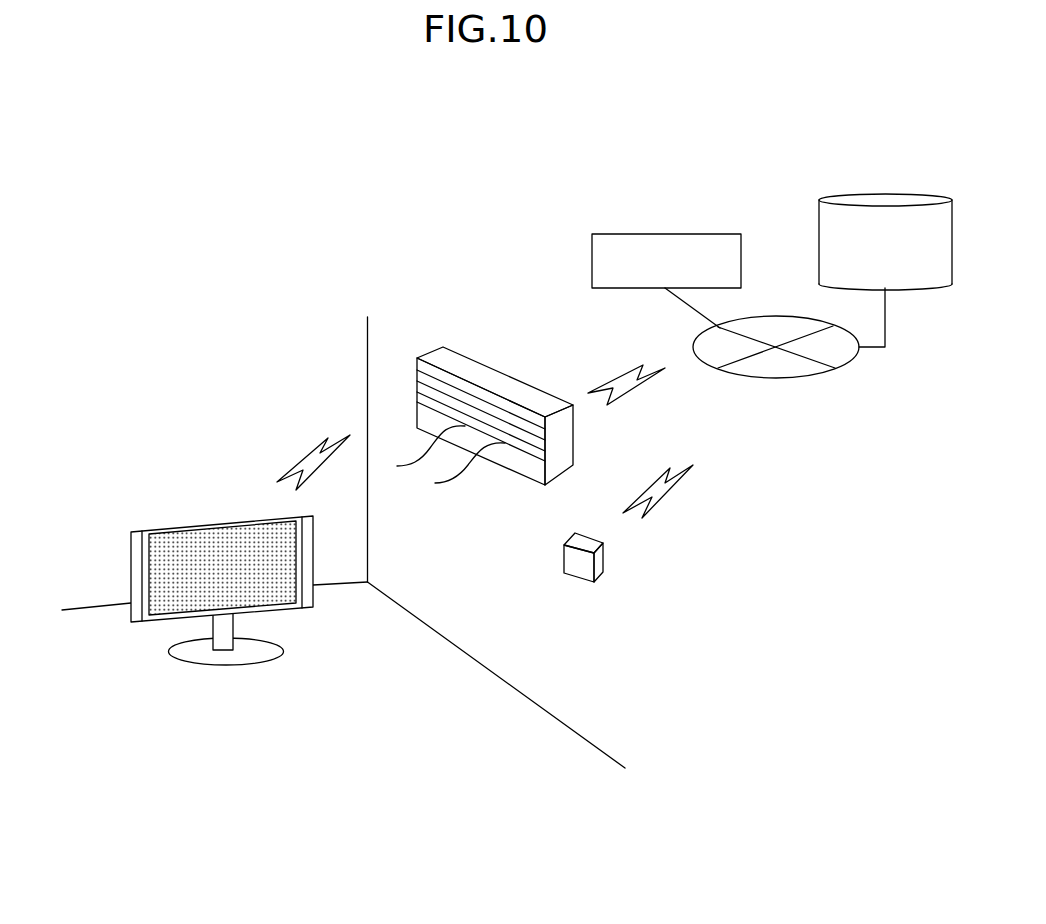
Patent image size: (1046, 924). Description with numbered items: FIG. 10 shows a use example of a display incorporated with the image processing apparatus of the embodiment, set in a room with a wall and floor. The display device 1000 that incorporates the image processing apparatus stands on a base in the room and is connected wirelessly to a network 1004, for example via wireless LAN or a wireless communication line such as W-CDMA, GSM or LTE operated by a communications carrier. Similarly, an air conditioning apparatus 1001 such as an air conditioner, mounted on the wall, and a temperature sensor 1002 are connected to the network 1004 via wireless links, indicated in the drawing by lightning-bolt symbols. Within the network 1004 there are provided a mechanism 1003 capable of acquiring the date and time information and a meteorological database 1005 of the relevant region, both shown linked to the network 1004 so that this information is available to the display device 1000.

The display device 1000 is at (150, 530).
The air conditioning apparatus 1001 is at (432, 349).
The temperature sensor 1002 is at (577, 580).
The mechanism capable of acquiring date and time information 1003 is at (687, 215).
The network 1004 is at (852, 363).
The meteorological database 1005 is at (908, 176).